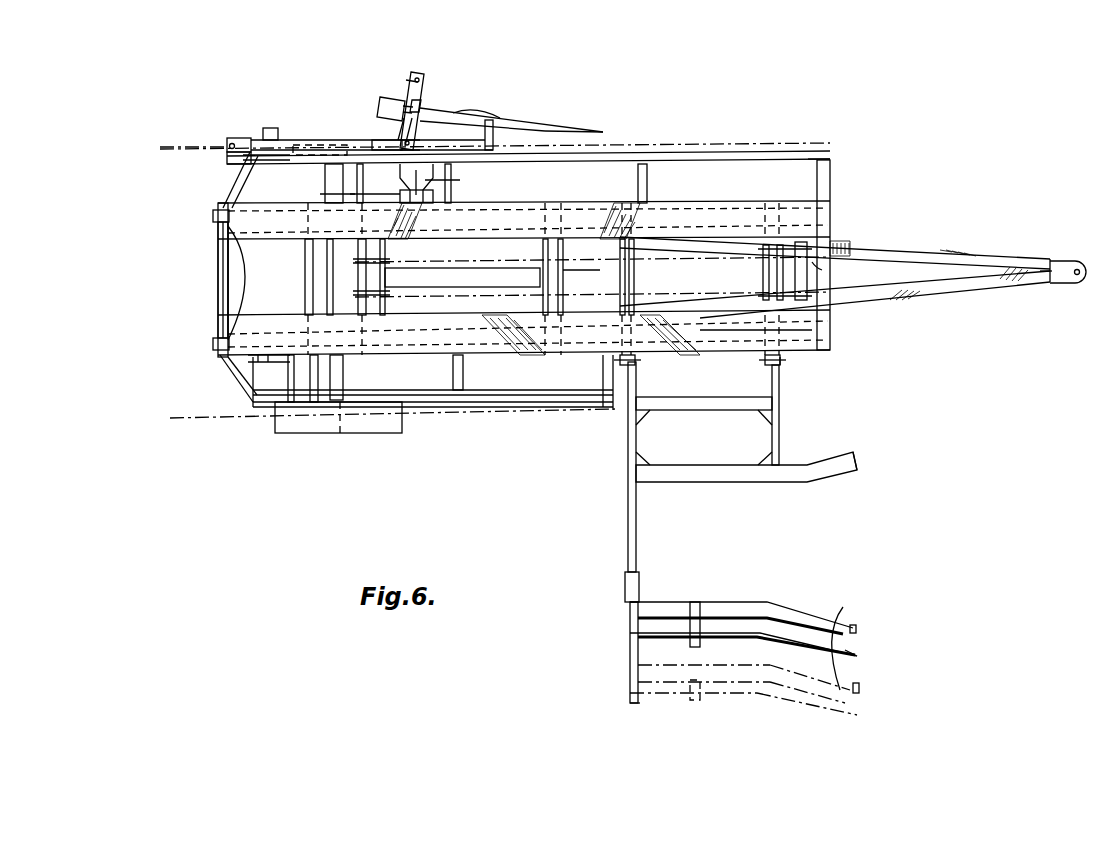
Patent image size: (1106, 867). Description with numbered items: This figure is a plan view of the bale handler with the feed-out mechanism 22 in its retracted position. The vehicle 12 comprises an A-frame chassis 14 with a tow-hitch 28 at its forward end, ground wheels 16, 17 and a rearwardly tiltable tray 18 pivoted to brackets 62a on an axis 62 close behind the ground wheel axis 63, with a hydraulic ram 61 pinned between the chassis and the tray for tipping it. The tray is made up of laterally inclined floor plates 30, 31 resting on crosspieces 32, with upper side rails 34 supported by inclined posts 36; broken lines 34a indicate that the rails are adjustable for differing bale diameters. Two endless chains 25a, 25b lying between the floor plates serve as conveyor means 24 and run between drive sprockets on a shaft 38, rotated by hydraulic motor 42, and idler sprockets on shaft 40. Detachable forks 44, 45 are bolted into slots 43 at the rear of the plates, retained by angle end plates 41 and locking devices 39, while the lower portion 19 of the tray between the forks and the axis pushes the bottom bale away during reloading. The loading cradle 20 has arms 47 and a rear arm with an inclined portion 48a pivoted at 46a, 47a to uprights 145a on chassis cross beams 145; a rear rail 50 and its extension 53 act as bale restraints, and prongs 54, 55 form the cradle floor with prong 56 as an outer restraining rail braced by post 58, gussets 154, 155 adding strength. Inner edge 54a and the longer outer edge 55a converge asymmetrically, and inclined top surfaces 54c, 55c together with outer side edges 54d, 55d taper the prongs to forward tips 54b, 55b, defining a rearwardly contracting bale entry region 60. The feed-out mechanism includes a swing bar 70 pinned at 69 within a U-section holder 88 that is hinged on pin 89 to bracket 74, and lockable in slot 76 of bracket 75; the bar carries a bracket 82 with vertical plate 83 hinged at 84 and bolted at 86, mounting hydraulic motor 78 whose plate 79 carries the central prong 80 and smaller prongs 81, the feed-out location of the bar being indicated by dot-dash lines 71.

The vehicle 12 is at (625, 258).
The A-frame chassis 14 is at (962, 245).
The ground wheel 16 is at (382, 420).
The ground wheel 17 is at (258, 150).
The tray 18 is at (832, 160).
The lower portion of the tray 19 is at (262, 428).
The bale loading cradle 20 is at (744, 493).
The feed-out mechanism 22 is at (494, 95).
The conveyor means 24 is at (808, 278).
The conveyor chain 25a is at (768, 294).
The conveyor chain 25b is at (705, 268).
The tow-hitch 28 is at (1066, 260).
The floor plate 30 is at (805, 218).
The floor plate 31 is at (803, 330).
The crosspiece 32 is at (218, 310).
The upper side rail 34 is at (780, 156).
The broken lines 34a is at (730, 145).
The post 36 is at (648, 180).
The shaft 38 is at (362, 200).
The locking device 39 is at (213, 218).
The shaft 40 is at (820, 270).
The angle end plate 41 is at (222, 280).
The hydraulic motor 42 is at (449, 183).
The slot 43 is at (250, 320).
The fork 44 is at (238, 378).
The fork 45 is at (228, 228).
The pivot 46a is at (638, 363).
The arm 47 is at (770, 445).
The pivot 47a is at (765, 363).
The inclined portion 48a is at (652, 395).
The rear rail 50 is at (627, 548).
The rail extension 53 is at (625, 598).
The prong 54 is at (802, 470).
The inner edge 54a is at (838, 472).
The forward tip 54b is at (858, 463).
The inclined top surface 54c is at (818, 470).
The outer side edge 54d is at (832, 455).
The prong 55 is at (762, 612).
The outer edge 55a is at (857, 628).
The forward tip 55b is at (860, 633).
The inclined top surface 55c is at (852, 650).
The outer side edge 55d is at (858, 693).
The prong 56 is at (857, 639).
The post 58 is at (700, 615).
The bale entry region 60 is at (790, 639).
The hydraulic ram 61 is at (410, 280).
The pivot axis 62 is at (312, 435).
The bracket 62a is at (330, 197).
The ground wheel axis 63 is at (343, 436).
The pin 69 is at (230, 145).
The swing bar 70 is at (282, 140).
The dot-dash lines 71 is at (540, 118).
The bracket 74 is at (270, 128).
The bracket 75 is at (295, 405).
The inclined slot 76 is at (263, 398).
The hydraulic motor 78 is at (388, 104).
The plate 79 is at (418, 100).
The central prong 80 is at (560, 125).
The prong 81 is at (485, 105).
The bracket 82 is at (420, 76).
The vertical plate 83 is at (408, 110).
The hinge 84 is at (405, 142).
The bolt 86 is at (425, 95).
The U-section holder 88 is at (250, 160).
The pin 89 is at (235, 182).
The chassis cross beam 145 is at (620, 275).
The upright 145a is at (782, 366).
The gusset 154 is at (640, 482).
The gusset 155 is at (640, 605).